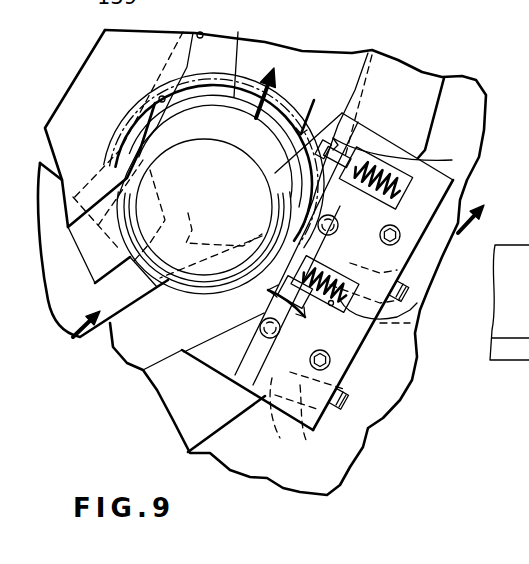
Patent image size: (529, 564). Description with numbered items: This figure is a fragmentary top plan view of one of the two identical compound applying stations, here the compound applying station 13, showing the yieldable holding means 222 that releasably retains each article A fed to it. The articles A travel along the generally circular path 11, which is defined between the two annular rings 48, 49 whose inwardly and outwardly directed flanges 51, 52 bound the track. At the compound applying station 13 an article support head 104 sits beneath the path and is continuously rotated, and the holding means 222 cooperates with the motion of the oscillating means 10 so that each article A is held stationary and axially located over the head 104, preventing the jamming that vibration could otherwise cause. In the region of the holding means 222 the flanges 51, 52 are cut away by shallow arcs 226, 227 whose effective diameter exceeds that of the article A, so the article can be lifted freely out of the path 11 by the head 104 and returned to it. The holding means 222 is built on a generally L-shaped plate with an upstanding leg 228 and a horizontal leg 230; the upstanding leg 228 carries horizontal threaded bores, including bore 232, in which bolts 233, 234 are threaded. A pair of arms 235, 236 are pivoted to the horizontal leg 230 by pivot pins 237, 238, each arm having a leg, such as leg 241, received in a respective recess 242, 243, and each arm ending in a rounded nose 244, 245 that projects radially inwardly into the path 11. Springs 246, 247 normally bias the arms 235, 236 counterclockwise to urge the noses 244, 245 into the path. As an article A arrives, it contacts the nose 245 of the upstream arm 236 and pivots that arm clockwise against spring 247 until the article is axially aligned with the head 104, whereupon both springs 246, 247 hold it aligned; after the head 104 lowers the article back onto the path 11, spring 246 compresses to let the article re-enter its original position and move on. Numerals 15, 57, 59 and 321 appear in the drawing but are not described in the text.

The oscillating means 10 is at (387, 150).
The circular path of article travel 11 is at (292, 57).
The compound applying station 13 is at (163, 303).
The clamp arm 15 is at (83, 333).
The annular plate or ring 48 is at (420, 77).
The annular plate or ring 49 is at (127, 141).
The inwardly directed flange 51 is at (368, 53).
The outwardly directed flange 52 is at (200, 33).
The hidden passage 57 is at (168, 216).
The dovetail block 59 is at (110, 277).
The article support head 104 is at (257, 54).
The yieldable holding means 222 is at (452, 160).
The shallow arc 226 is at (345, 147).
The shallow arc 227 is at (157, 100).
The upstanding leg 228 is at (417, 228).
The horizontal leg 230 is at (373, 147).
The horizontal threaded bore 232 is at (270, 417).
The bolt 233 is at (422, 278).
The bolt 234 is at (306, 428).
The arm 235 is at (335, 232).
The arm 236 is at (233, 370).
The pivot pin 237 is at (322, 192).
The pivot pin 238 is at (258, 320).
The leg 241 is at (415, 317).
The recess 242 is at (445, 167).
The recess 243 is at (340, 330).
The rounded nose 244 is at (333, 143).
The rounded nose 245 is at (255, 232).
The spring 246 is at (465, 177).
The spring 247 is at (418, 317).
The fastening bolts 321 is at (395, 262).
The article A is at (214, 183).